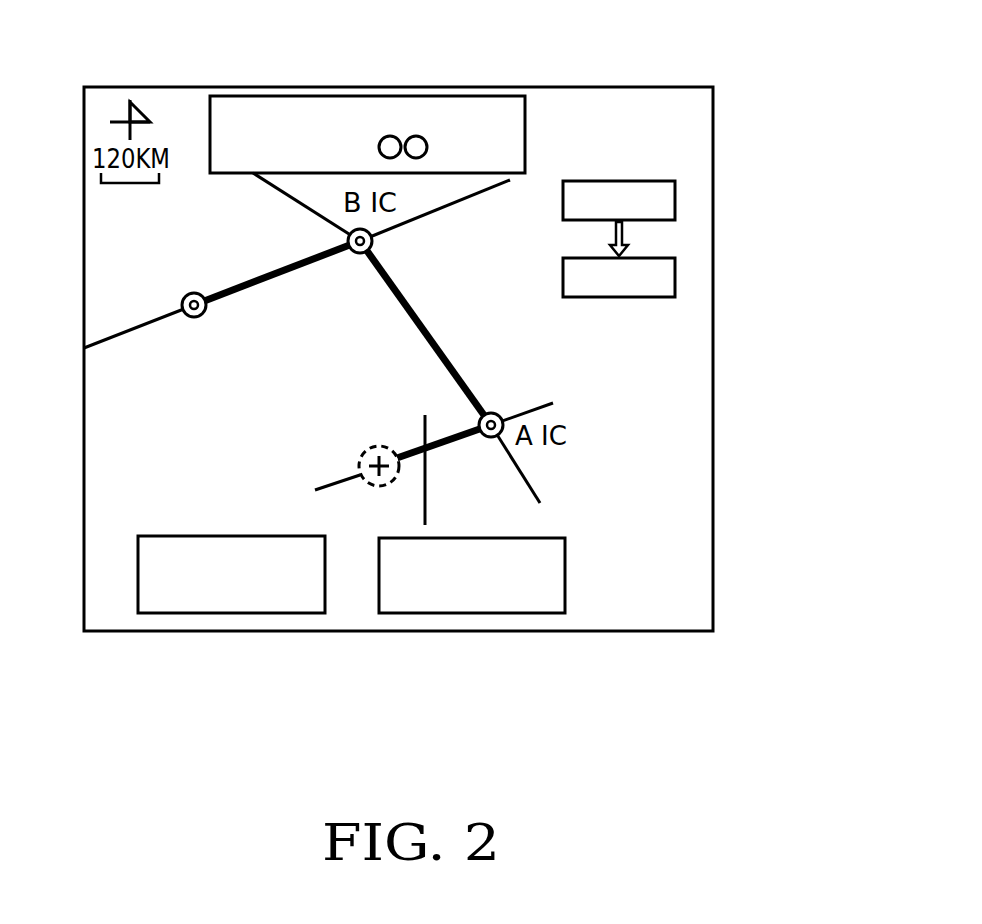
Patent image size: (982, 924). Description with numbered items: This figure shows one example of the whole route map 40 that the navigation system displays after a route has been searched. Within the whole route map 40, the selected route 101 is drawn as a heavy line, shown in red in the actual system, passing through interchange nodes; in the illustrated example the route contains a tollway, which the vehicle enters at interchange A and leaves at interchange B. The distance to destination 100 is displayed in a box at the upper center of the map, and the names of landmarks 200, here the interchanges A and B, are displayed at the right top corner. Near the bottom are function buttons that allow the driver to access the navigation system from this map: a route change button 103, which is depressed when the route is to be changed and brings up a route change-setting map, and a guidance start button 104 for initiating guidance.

The whole route map 40 is at (728, 430).
The distance to destination 100 is at (373, 107).
The selected route 101 is at (414, 321).
The route change button 103 is at (283, 604).
The guidance start button 104 is at (503, 605).
The names of landmarks 200 is at (667, 197).